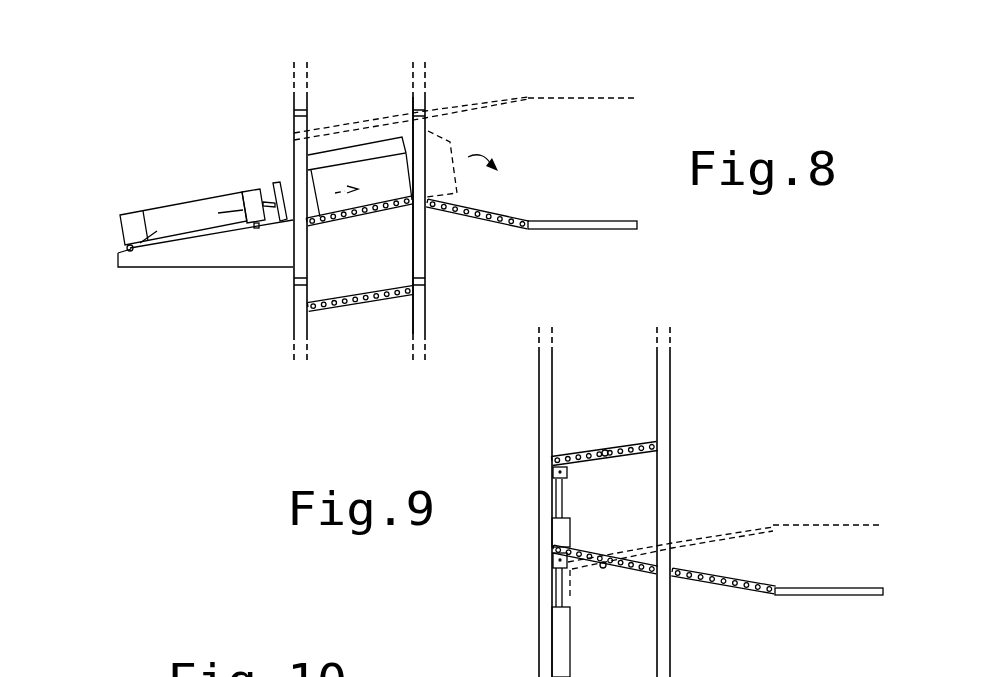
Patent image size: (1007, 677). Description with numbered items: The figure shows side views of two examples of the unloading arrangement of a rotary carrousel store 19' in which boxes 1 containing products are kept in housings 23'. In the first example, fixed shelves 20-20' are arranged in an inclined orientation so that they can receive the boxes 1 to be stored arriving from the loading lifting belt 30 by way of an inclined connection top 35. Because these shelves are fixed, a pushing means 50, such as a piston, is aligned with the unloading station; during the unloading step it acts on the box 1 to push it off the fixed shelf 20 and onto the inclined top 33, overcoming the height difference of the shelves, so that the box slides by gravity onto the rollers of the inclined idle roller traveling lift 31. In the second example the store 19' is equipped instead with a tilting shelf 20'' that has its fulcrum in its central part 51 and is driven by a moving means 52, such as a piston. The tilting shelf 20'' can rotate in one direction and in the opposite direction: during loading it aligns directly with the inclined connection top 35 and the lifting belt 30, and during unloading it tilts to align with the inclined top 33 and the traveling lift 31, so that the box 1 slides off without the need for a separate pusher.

In FIG. 8, the box 1 is at (330, 162).
In FIG. 8, the store 19' is at (217, 343).
In FIG. 9, the store 19' is at (779, 390).
In FIG. 8, the fixed shelf 20 is at (364, 191).
In FIG. 8, the fixed shelves 20-20' is at (358, 347).
In FIG. 9, the tilting shelf 20'' is at (655, 497).
In FIG. 9, the housing 23' is at (611, 457).
In FIG. 8, the loading lifting belt 30 is at (543, 100).
In FIG. 9, the loading lifting belt 30 is at (833, 522).
In FIG. 8, the traveling lift 31 is at (562, 228).
In FIG. 9, the traveling lift 31 is at (820, 595).
In FIG. 8, the inclined top 33 is at (488, 224).
In FIG. 9, the inclined top 33 is at (698, 580).
In FIG. 8, the inclined connection top 35 is at (525, 97).
In FIG. 9, the inclined connection top 35 is at (740, 522).
In FIG. 8, the pushing means 50 is at (133, 251).
In FIG. 9, the central part (fulcrum) 51 is at (603, 565).
In FIG. 9, the moving means 52 is at (560, 640).